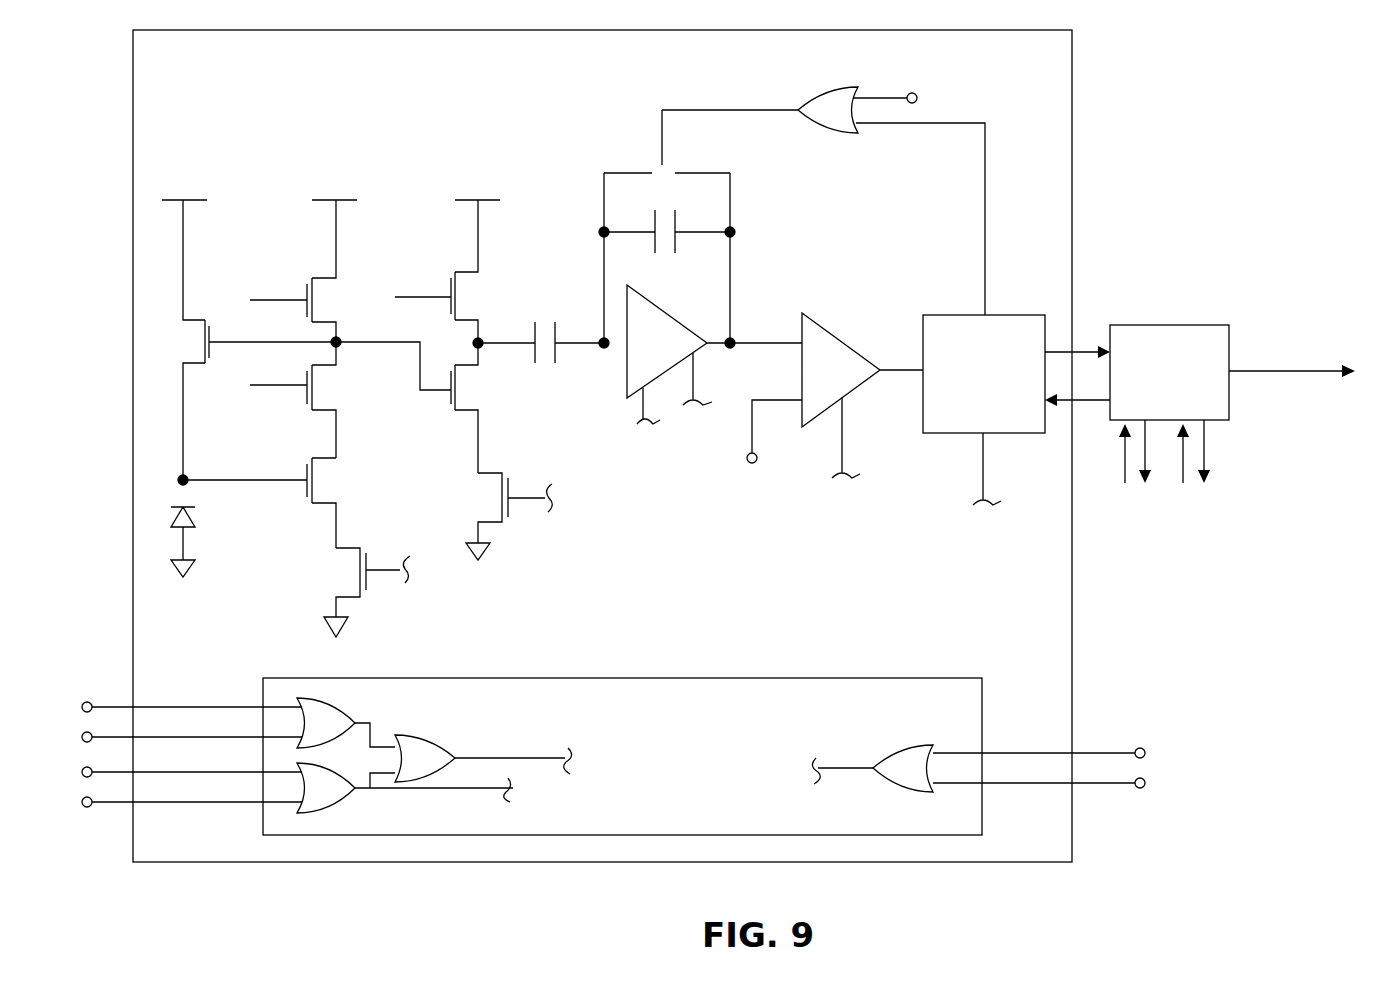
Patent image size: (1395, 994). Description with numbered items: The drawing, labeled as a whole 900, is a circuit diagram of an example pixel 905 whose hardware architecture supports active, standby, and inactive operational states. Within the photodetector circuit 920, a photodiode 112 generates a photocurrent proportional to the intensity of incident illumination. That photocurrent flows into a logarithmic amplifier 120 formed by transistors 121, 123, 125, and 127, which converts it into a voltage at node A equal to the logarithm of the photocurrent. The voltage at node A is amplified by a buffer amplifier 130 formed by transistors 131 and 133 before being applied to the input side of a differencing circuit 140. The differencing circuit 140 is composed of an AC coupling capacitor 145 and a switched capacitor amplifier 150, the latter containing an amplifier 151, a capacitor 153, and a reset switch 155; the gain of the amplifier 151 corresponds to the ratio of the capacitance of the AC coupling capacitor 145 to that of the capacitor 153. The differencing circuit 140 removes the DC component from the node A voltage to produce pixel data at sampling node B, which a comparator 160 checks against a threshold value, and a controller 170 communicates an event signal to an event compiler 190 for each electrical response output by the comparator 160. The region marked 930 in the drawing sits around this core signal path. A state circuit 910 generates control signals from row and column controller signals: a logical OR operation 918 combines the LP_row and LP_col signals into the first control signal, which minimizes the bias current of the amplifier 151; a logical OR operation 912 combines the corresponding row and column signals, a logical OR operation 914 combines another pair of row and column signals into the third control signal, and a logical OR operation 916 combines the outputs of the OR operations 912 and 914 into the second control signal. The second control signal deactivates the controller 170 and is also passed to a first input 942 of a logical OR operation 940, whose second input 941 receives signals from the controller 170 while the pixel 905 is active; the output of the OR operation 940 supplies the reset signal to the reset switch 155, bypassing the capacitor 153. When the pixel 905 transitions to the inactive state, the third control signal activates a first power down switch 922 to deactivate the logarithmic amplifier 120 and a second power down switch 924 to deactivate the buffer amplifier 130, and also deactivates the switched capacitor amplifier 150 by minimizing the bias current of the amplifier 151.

The pixel circuit system 900 is at (1218, 68).
The pixel 905 is at (1041, 69).
The state circuit 910 is at (693, 713).
The logical OR operation 912 is at (335, 732).
The logical OR operation 914 is at (302, 788).
The logical OR operation 916 is at (435, 767).
The logical OR operation 918 is at (919, 777).
The photodetector circuit 920 is at (524, 84).
The first power down switch 922 is at (345, 581).
The second power down switch 924 is at (489, 506).
The pixel core circuit 930 is at (810, 597).
The logical OR operation 940 is at (845, 119).
The second input 941 is at (893, 126).
The first input 942 is at (872, 96).
The photodiode 112 is at (196, 516).
The logarithmic amplifier 120 is at (263, 235).
The transistor 121 is at (192, 351).
The transistor 123 is at (345, 307).
The transistor 125 is at (345, 393).
The transistor 127 is at (345, 491).
The buffer amplifier 130 is at (506, 250).
The transistor 131 is at (488, 304).
The transistor 133 is at (488, 398).
The differencing circuit 140 is at (725, 84).
The AC coupling capacitor 145 is at (556, 368).
The switched capacitor amplifier 150 is at (660, 472).
The amplifier 151 is at (670, 353).
The capacitor 153 is at (682, 250).
The reset switch 155 is at (652, 165).
The comparator 160 is at (843, 383).
The controller 170 is at (999, 403).
The event compiler 190 is at (1185, 414).